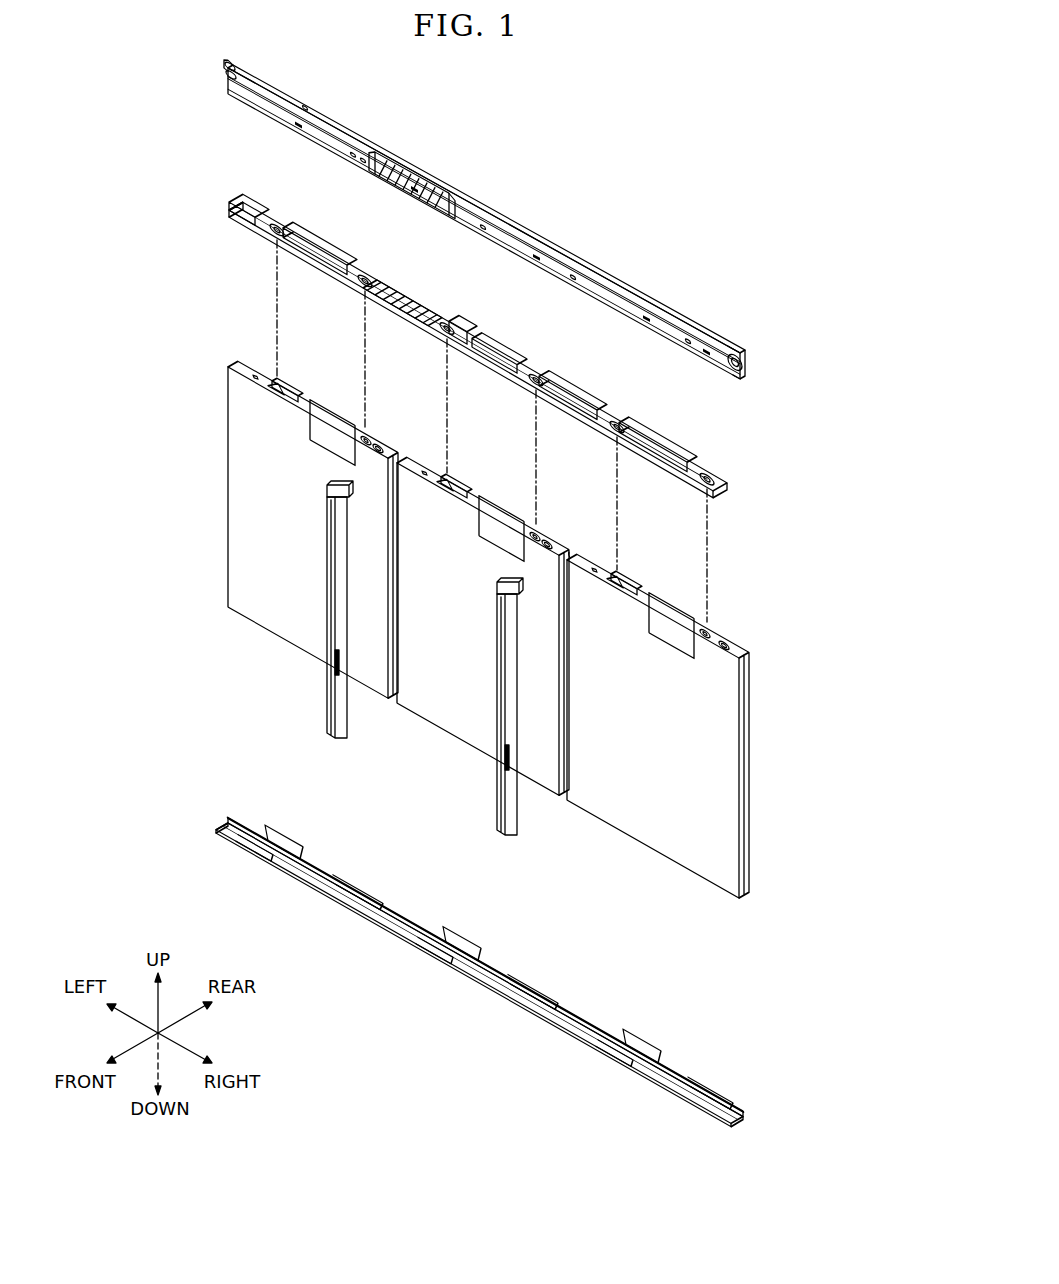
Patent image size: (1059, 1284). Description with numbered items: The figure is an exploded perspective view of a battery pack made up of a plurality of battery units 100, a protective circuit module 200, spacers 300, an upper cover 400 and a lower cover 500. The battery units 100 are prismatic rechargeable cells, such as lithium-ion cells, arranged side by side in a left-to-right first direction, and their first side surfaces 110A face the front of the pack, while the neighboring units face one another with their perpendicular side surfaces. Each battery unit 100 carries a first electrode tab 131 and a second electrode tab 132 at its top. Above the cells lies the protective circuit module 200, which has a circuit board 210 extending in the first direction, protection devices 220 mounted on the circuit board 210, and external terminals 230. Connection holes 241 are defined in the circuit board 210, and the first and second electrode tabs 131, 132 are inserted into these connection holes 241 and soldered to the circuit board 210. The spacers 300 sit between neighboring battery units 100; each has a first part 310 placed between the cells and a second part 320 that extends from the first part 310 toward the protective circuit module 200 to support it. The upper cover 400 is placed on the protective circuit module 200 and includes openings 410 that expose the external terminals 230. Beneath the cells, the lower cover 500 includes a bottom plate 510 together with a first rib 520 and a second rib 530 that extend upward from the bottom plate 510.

The battery unit 100 is at (494, 611).
The first side surface 110A is at (252, 606).
The first electrode tab 131 is at (290, 372).
The second electrode tab 132 is at (374, 422).
The protective circuit module 200 is at (536, 394).
The circuit board 210 is at (725, 490).
The protection device 220 is at (585, 394).
The external terminal 230 is at (413, 300).
The connection hole 241 is at (282, 222).
The spacer 300 is at (361, 661).
The first part 310 is at (328, 705).
The second part 320 is at (330, 500).
The upper cover 400 is at (493, 220).
The opening 410 is at (416, 160).
The lower cover 500 is at (474, 947).
The bottom plate 510 is at (745, 1112).
The first rib 520 is at (395, 922).
The second rib 530 is at (310, 845).